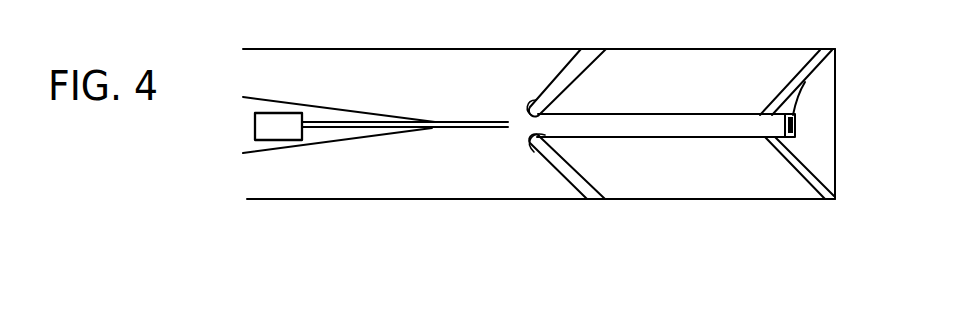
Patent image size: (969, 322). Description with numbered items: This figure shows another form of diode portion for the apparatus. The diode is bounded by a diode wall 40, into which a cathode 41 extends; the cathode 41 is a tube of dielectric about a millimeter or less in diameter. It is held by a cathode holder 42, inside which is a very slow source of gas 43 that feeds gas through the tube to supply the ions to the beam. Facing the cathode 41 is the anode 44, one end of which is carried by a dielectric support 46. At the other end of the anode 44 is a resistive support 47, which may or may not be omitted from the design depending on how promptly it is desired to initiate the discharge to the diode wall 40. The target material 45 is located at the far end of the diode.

The diode wall 40 is at (544, 13).
The cathode 41 is at (458, 121).
The cathode holder 42 is at (344, 108).
The source of gas 43 is at (276, 113).
The anode 44 is at (627, 114).
The target material 45 is at (835, 49).
The dielectric support 46 is at (578, 67).
The resistive support 47 is at (773, 103).